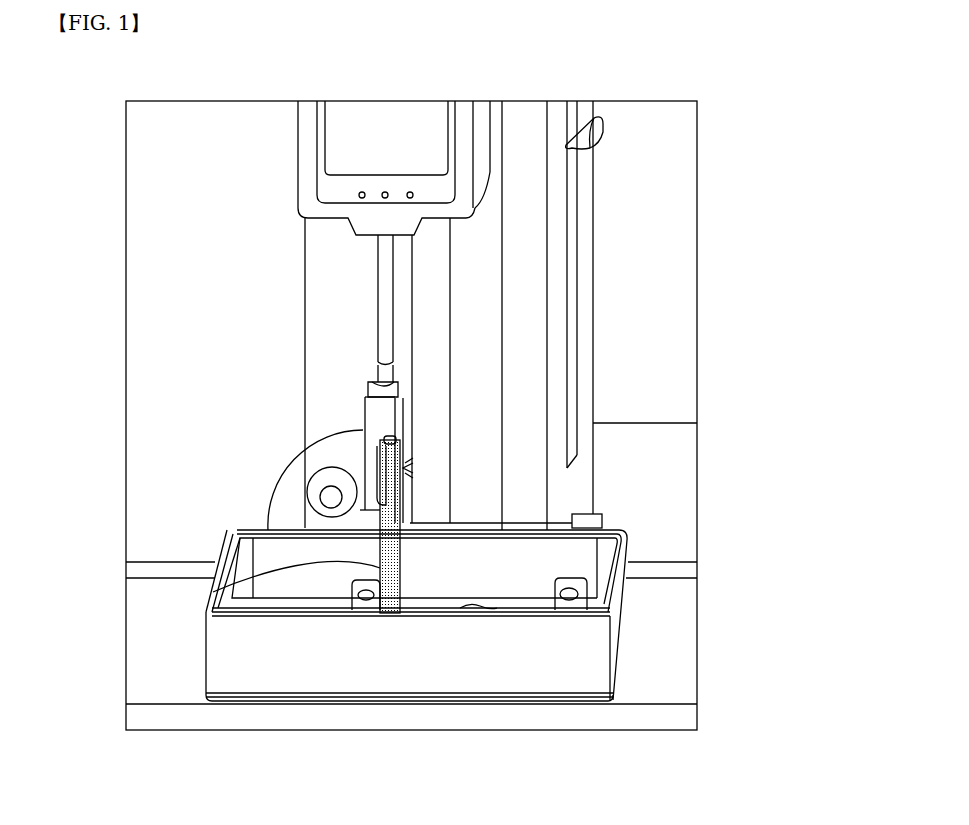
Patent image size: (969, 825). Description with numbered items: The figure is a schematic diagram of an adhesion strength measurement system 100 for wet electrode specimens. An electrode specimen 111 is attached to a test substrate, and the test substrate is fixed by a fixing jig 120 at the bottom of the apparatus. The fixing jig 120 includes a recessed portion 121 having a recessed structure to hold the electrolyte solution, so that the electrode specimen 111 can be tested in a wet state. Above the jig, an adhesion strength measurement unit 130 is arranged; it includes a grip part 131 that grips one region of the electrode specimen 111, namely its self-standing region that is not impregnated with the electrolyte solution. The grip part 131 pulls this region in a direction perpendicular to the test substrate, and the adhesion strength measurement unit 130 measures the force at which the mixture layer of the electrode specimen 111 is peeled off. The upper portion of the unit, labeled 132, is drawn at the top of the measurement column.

The adhesion strength measurement system 100 is at (96, 122).
The electrode specimen 111 is at (213, 592).
The fixing jig 120 is at (620, 610).
The recessed portion 121 is at (215, 616).
The adhesion strength measurement unit 130 is at (250, 341).
The grip part 131 is at (385, 506).
The control display device 132 is at (337, 131).